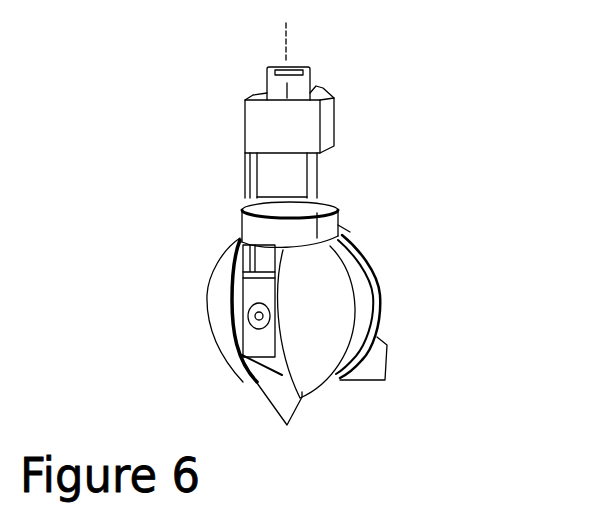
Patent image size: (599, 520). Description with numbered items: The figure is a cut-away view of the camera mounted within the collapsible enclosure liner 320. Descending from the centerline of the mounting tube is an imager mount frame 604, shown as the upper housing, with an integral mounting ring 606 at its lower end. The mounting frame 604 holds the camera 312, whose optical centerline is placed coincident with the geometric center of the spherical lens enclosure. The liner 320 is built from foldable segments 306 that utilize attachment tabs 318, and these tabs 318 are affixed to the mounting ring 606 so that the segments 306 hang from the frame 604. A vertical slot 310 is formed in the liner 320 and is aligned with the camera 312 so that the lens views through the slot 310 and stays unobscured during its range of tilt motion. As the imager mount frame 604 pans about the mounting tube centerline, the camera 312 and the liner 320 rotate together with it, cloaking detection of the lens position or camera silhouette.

The imager mount frame 604 is at (285, 132).
The mounting ring 606 is at (245, 211).
The camera 312 is at (238, 298).
The attachment tabs 318 is at (343, 229).
The liner 320 is at (313, 447).
The foldable segments 306 is at (305, 362).
The vertical slot 310 is at (285, 417).